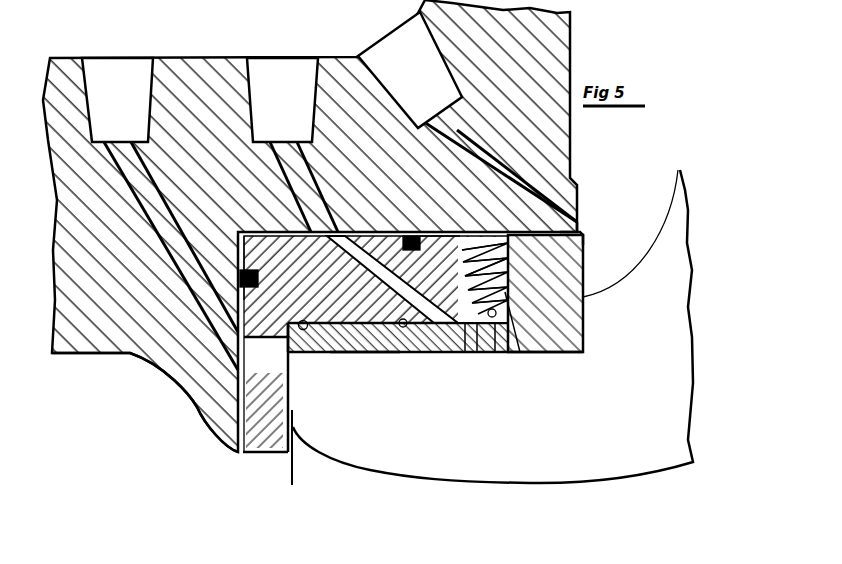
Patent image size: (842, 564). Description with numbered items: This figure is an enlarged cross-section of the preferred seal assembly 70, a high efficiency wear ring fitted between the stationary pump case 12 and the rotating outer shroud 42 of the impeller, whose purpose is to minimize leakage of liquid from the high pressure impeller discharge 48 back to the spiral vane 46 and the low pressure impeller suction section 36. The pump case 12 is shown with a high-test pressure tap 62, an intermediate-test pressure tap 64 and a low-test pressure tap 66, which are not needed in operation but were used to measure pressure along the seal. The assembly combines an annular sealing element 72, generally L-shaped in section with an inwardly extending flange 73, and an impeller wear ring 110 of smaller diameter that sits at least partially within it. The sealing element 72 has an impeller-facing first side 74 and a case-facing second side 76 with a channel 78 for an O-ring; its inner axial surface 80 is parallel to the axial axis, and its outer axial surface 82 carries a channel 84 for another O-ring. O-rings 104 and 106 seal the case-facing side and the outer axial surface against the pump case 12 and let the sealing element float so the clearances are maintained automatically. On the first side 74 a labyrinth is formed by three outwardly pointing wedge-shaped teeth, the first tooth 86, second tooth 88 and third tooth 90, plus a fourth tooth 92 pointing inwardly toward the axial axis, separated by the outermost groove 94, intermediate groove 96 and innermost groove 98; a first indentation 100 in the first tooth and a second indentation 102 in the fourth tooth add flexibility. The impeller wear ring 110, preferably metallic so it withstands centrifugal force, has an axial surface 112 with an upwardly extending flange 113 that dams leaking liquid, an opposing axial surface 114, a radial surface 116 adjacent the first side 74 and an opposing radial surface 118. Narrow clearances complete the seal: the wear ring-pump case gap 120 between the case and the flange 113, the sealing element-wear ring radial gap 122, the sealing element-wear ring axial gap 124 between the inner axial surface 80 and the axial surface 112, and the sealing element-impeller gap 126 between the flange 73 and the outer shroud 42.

The pump case 12 is at (522, 73).
The low pressure impeller suction section 36 is at (274, 447).
The outer shroud 42 is at (642, 400).
The spiral vane 46 is at (311, 471).
The high pressure impeller discharge 48 is at (631, 147).
The high-test pressure tap 62 is at (392, 42).
The intermediate-test pressure tap 64 is at (286, 70).
The low-test pressure tap 66 is at (126, 72).
The seal assembly 70 is at (634, 198).
The annular sealing element 72 is at (370, 225).
The inwardly extending flange 73 is at (247, 453).
The first side 74 is at (495, 353).
The second side 76 is at (240, 300).
The channel 78 is at (241, 270).
The inner axial surface 80 is at (303, 320).
The outer axial surface 82 is at (268, 232).
The channel 84 is at (426, 232).
The first tooth 86 is at (472, 245).
The second tooth 88 is at (500, 262).
The third tooth 90 is at (500, 286).
The fourth tooth 92 is at (478, 353).
The outermost groove 94 is at (505, 249).
The intermediate groove 96 is at (505, 268).
The innermost groove 98 is at (520, 318).
The first indentation 100 is at (500, 234).
The second indentation 102 is at (466, 332).
The O-ring 104 is at (260, 282).
The O-ring 106 is at (406, 235).
The impeller wear ring 110 is at (548, 353).
The axial surface 112 is at (349, 351).
The upwardly extending flange 113 is at (581, 235).
The opposing axial surface 114 is at (357, 353).
The radial surface 116 is at (518, 333).
The opposing radial surface 118 is at (586, 282).
The wear ring-pump case gap 120 is at (580, 226).
The sealing element-wear ring radial gap 122 is at (500, 298).
The sealing element-wear ring axial gap 124 is at (357, 321).
The sealing element-impeller gap 126 is at (289, 400).